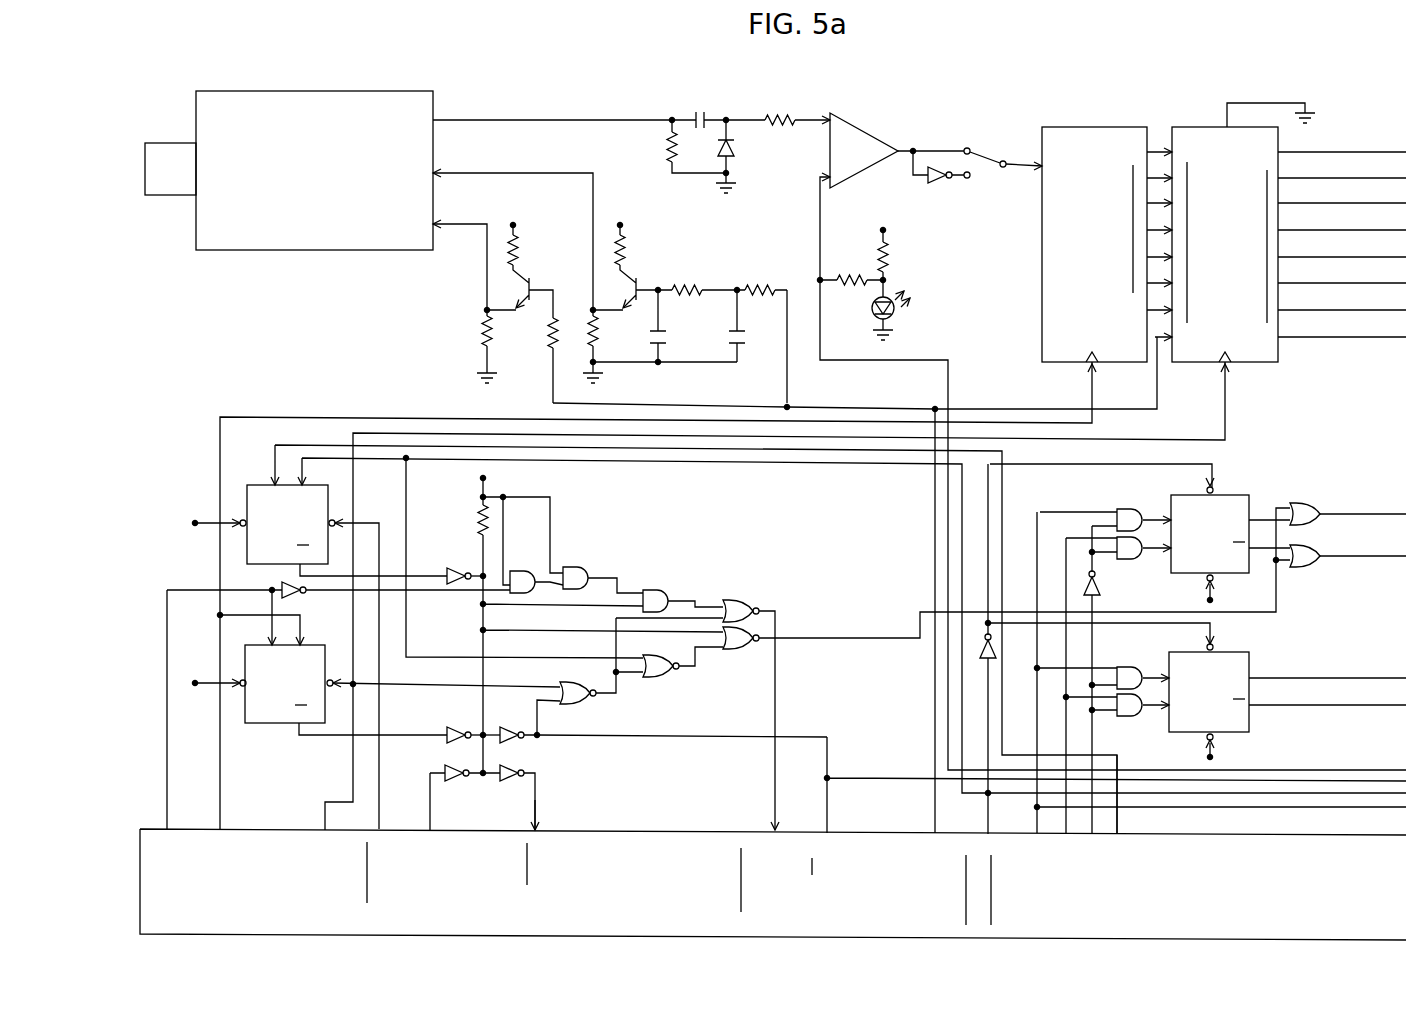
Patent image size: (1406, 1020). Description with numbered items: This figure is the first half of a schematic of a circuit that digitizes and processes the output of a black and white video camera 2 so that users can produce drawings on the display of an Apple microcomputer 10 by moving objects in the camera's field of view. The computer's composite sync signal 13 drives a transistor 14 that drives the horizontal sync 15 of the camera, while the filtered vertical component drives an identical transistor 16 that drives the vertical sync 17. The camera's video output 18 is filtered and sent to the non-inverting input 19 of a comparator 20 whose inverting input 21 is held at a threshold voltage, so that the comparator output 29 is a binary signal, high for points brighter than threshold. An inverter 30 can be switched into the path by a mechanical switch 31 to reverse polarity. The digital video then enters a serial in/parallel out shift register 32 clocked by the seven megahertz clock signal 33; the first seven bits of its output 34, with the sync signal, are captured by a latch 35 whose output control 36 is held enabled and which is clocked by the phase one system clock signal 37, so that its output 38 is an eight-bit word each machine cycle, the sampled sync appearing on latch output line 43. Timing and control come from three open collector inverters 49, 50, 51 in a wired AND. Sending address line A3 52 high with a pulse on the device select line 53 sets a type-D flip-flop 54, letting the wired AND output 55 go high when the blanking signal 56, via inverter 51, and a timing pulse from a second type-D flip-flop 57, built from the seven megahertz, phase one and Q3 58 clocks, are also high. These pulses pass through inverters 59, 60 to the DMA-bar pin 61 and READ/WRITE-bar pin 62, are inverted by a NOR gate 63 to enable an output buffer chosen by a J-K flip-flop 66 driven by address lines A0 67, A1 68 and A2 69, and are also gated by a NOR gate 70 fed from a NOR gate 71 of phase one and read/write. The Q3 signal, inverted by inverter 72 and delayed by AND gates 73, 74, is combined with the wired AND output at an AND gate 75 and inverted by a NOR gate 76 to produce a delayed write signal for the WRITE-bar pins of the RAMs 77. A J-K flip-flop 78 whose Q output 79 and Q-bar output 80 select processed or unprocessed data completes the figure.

The video camera 2 is at (262, 95).
The microcomputer 10 is at (631, 842).
The composite sync signal 13 is at (928, 826).
The transistor 14 is at (534, 281).
The horizontal sync 15 is at (462, 225).
The transistor 16 is at (644, 290).
The vertical sync 17 is at (487, 173).
The video output 18 is at (515, 120).
The non-inverting input 19 is at (808, 120).
The comparator 20 is at (870, 141).
The inverting input 21 is at (820, 195).
The comparator output 29 is at (913, 151).
The inverter 30 is at (940, 186).
The mechanical switch 31 is at (990, 160).
The shift register 32 is at (1075, 131).
The 7 MHz clock signal 33 is at (227, 816).
The shift register output 34 is at (1133, 170).
The latch 35 is at (1192, 127).
The output control 36 is at (1275, 100).
The phase 1 system clock signal 37 is at (352, 778).
The latch output 38 is at (1267, 282).
The latch output line 43 is at (1299, 343).
The open collector inverter 49 is at (462, 577).
The open collector inverter 50 is at (457, 733).
The open collector inverter 51 is at (455, 772).
The address line A3 52 is at (1118, 826).
The device select line 53 is at (982, 827).
The type-D flip-flop 54 is at (256, 492).
The wired AND output 55 is at (483, 630).
The composite blanking signal 56 is at (432, 827).
The type-D flip-flop 57 is at (256, 655).
The Q3 clock 58 is at (162, 814).
The inverter 59 is at (514, 772).
The inverter 60 is at (517, 730).
The DMA-bar pin 61 is at (544, 821).
The READ/WRITE-bar pin 62 is at (832, 816).
The NOR gate 63 is at (732, 651).
The J-K flip-flop 66 is at (1239, 500).
The address line A0 67 is at (1037, 828).
The address line A1 68 is at (1052, 735).
The address line A2 69 is at (1093, 746).
The NOR gate 70 is at (654, 679).
The NOR gate 71 is at (577, 704).
The inverter 72 is at (299, 592).
The AND gate 73 is at (535, 580).
The AND gate 74 is at (590, 572).
The AND gate 75 is at (654, 596).
The NOR gate 76 is at (732, 605).
The WRITE-bar pins of the RAMs 77 is at (773, 785).
The J-K flip-flop 78 is at (1243, 659).
The Q output 79 is at (1299, 680).
The Q-bar output 80 is at (1297, 706).